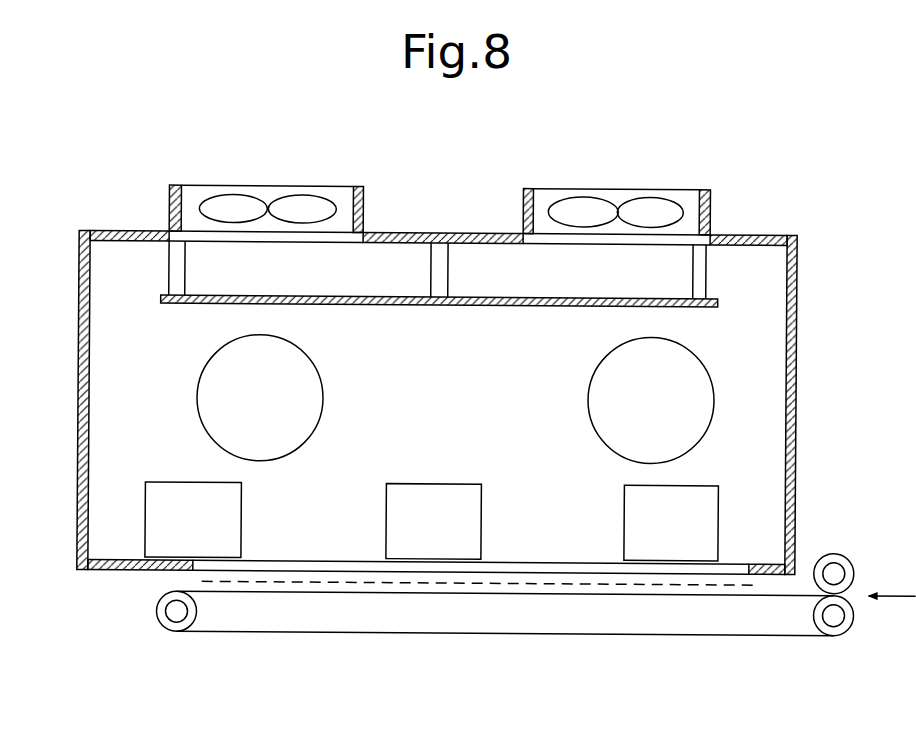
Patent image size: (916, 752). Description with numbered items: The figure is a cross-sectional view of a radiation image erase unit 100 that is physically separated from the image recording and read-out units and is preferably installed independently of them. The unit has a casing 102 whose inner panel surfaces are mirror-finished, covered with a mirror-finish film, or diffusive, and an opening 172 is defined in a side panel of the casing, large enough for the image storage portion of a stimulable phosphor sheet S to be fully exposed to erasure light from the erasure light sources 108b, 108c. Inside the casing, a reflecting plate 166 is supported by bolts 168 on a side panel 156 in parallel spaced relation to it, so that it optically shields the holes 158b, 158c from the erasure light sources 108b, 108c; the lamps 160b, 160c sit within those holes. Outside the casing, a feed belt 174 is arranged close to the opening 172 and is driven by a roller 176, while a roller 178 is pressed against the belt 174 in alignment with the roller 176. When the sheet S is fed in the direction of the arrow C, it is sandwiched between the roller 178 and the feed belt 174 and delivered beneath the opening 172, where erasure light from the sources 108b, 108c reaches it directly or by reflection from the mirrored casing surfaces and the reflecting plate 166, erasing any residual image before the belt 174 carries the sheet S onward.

The radiation image erase unit 100 is at (440, 231).
The casing 102 is at (126, 231).
The side panel 156 is at (743, 234).
The hole 158b is at (186, 212).
The hole 158c is at (678, 198).
The heater lamps 160b is at (225, 204).
The heater lamps 160c is at (579, 204).
The reflecting plate 166 is at (380, 305).
The bolts 168 is at (166, 276).
The erasure light source 108b is at (216, 448).
The erasure light source 108c is at (606, 448).
The opening 172 is at (237, 567).
The feed belt 174 is at (372, 636).
The roller 176 is at (845, 622).
The roller 178 is at (841, 552).
The stimulable phosphor sheet S is at (527, 586).
The arrow C is at (891, 578).